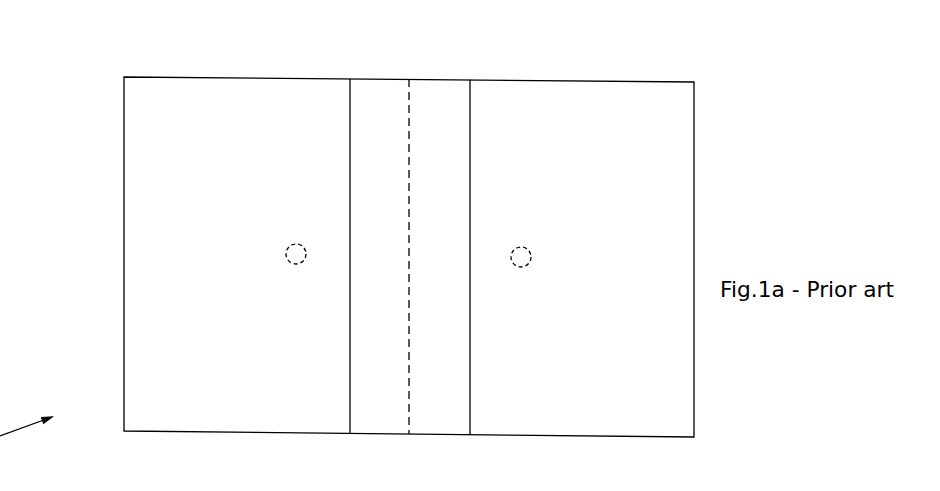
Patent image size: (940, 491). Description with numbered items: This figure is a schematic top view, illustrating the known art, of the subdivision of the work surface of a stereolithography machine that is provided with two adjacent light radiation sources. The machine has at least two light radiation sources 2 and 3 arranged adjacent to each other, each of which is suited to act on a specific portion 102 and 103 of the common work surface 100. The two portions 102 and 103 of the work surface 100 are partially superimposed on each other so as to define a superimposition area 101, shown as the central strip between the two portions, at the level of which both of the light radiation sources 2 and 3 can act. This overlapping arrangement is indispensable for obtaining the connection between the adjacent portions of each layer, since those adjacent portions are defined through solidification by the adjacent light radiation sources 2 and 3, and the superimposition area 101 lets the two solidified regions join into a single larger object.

The work surface 100 is at (463, 284).
The superimposition area 101 is at (469, 437).
The portion of the work surface 102 is at (468, 63).
The portion of the work surface 103 is at (694, 44).
The light radiation source 2 is at (280, 248).
The light radiation source 3 is at (538, 254).